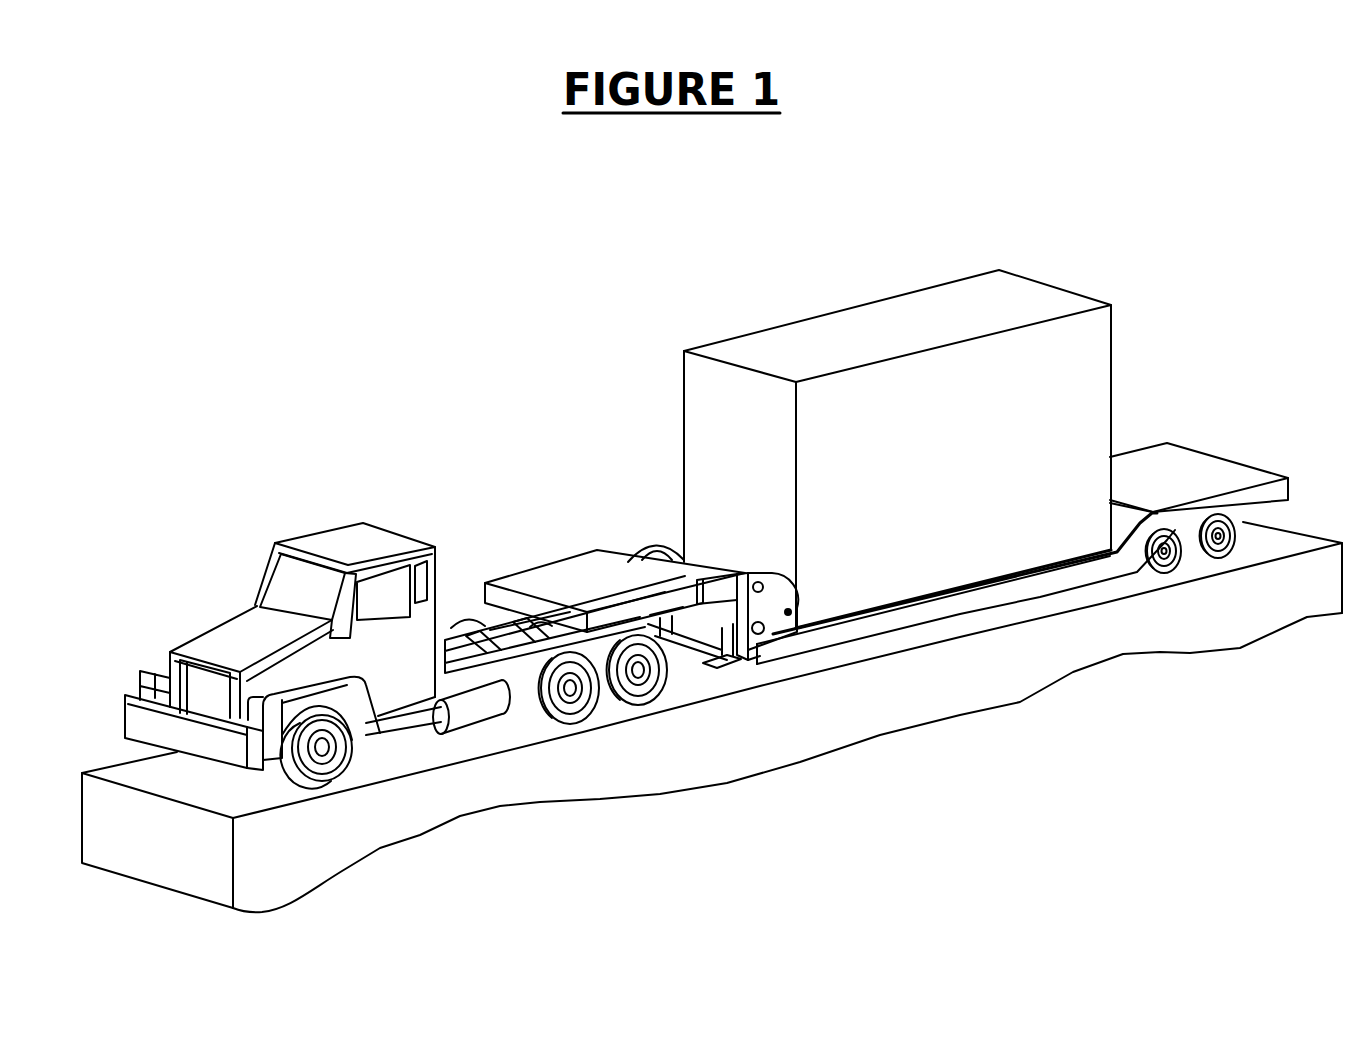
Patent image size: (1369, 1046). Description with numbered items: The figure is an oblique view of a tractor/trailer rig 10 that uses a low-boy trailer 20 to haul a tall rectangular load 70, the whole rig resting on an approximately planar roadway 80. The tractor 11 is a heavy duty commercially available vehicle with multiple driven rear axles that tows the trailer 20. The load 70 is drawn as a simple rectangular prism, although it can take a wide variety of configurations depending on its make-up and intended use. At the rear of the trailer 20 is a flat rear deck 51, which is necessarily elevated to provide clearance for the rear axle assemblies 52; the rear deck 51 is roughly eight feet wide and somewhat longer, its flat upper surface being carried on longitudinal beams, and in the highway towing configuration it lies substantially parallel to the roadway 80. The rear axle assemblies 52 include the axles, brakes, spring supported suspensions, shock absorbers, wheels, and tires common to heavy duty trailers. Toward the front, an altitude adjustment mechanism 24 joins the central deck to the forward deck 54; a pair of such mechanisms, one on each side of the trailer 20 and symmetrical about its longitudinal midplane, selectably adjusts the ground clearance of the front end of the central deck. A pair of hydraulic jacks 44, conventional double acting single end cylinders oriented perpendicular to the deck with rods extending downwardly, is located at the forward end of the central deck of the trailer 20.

The tractor/trailer rig 10 is at (428, 306).
The tractor 11 is at (320, 533).
The low-boy trailer 20 is at (1197, 452).
The altitude adjustment mechanism 24 is at (682, 559).
The hydraulic jacks 44 is at (710, 668).
The rear deck 51 is at (1125, 457).
The rear axle assemblies 52 is at (1147, 572).
The forward deck 54 is at (553, 563).
The load 70 is at (686, 420).
The roadway 80 is at (1278, 527).